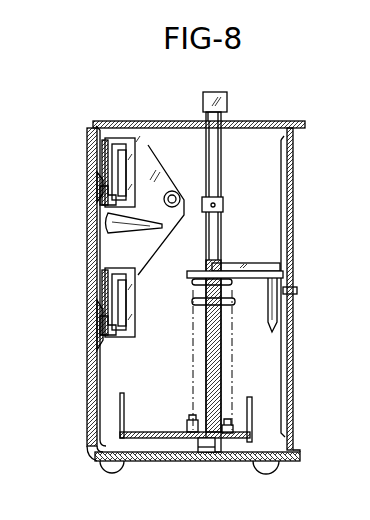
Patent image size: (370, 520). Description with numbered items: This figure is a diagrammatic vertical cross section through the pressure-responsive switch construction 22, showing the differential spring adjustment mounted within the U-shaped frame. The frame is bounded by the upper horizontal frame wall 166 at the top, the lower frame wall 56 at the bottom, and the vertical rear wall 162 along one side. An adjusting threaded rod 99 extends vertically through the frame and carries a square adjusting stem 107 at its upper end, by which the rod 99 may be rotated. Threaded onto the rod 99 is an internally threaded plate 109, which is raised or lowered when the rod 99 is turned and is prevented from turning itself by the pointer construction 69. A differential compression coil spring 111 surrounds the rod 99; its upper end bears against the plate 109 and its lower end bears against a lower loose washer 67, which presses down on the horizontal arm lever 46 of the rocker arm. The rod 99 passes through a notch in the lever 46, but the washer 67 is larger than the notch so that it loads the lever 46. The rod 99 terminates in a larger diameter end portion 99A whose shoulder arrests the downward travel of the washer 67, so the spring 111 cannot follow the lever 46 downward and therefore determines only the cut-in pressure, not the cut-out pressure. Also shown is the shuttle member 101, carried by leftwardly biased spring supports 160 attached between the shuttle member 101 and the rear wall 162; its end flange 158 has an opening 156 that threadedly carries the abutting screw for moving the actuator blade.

The cabinet housing 22 is at (306, 104).
The upper horizontal frame wall 166 is at (255, 121).
The lower frame wall 56 is at (294, 455).
The square adjusting stem 107 is at (214, 92).
The adjusting threaded rod 99 is at (218, 378).
The internally threaded plate 109 is at (228, 270).
The pointer construction 69 is at (297, 291).
The end flange 158 is at (148, 145).
The opening 156 is at (172, 190).
The shuttle member 101 is at (97, 244).
The spring supports 160 is at (130, 172).
The vertical rear wall 162 is at (97, 270).
The differential compression coil spring 111 is at (232, 424).
The lower loose washer 67 is at (194, 420).
The horizontal arm lever 46 is at (152, 438).
The larger diameter end portion 99A is at (207, 452).